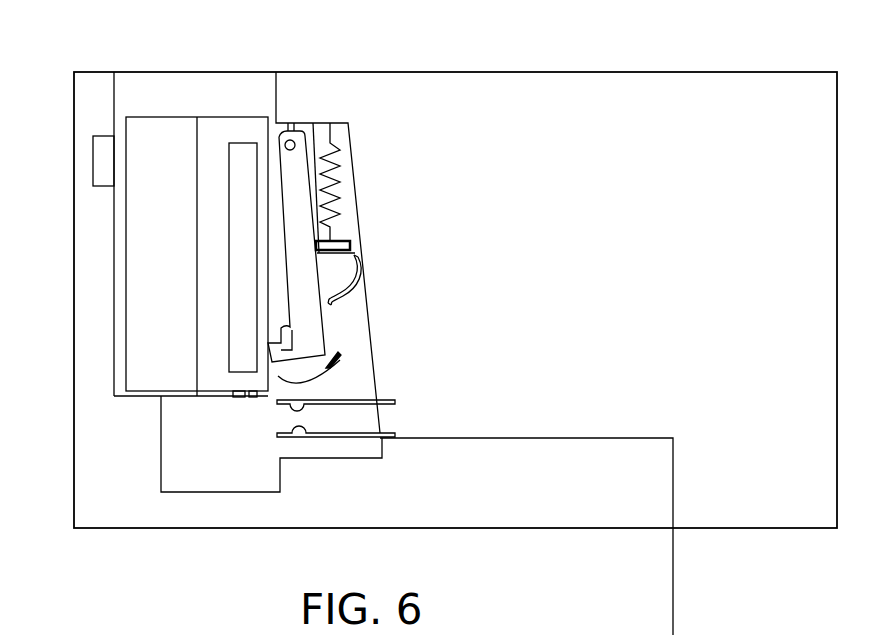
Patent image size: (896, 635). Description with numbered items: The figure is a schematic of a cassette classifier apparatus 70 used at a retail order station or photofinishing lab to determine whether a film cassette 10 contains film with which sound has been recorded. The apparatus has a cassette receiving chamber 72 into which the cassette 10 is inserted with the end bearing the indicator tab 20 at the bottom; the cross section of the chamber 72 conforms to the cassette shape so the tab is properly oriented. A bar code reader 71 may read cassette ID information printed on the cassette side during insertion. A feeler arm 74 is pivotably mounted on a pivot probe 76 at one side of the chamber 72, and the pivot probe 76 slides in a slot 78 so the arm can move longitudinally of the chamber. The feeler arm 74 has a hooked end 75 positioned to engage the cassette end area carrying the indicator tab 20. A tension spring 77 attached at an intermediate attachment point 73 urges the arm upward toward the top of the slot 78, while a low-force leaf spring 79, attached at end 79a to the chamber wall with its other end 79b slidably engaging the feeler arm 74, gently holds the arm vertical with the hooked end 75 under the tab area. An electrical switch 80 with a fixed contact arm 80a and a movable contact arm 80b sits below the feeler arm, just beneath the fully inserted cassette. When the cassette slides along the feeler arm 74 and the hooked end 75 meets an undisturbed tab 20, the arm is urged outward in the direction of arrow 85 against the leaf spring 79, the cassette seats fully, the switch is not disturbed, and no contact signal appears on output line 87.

The cassette classifier apparatus 70 is at (753, 65).
The bar code reader 71 is at (93, 163).
The cassette receiving chamber 72 is at (126, 72).
The film cassette 10 is at (153, 130).
The indicator tab 20 is at (233, 397).
The arrow 85 is at (261, 397).
The feeler arm 74 is at (312, 150).
The tension spring 77 is at (337, 148).
The intermediate attachment point 73 is at (358, 240).
The leaf spring 79 is at (402, 271).
The end of leaf spring 79a is at (365, 250).
The other end of leaf spring 79b is at (333, 303).
The pivot probe 76 is at (300, 147).
The slot 78 is at (288, 126).
The hooked end 75 is at (292, 330).
The electrical switch 80 is at (360, 469).
The fixed contact arm 80a is at (392, 440).
The movable contact arm 80b is at (397, 402).
The output line 87 is at (673, 488).